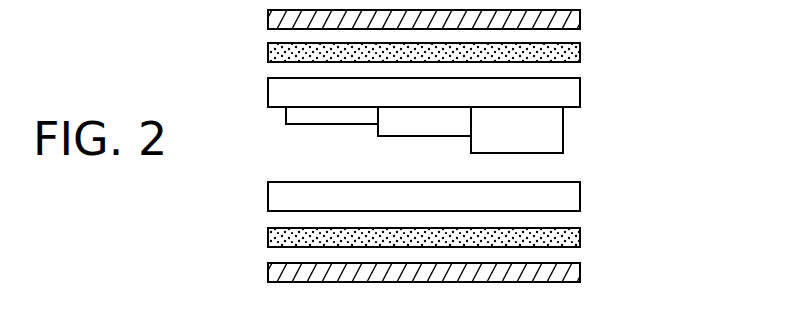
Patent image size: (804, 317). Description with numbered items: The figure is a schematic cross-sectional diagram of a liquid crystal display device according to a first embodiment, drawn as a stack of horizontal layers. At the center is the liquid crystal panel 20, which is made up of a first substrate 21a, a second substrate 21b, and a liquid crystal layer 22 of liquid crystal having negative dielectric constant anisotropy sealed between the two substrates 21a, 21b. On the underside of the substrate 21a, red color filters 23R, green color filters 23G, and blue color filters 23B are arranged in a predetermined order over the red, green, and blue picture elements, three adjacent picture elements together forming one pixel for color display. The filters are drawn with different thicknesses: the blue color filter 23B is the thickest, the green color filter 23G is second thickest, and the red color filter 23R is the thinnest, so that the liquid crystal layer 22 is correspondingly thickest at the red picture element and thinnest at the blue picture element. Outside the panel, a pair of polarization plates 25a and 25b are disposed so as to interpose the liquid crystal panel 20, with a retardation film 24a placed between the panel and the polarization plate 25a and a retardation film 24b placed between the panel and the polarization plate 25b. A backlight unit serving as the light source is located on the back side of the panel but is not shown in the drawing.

The liquid crystal panel 20 is at (253, 80).
The first substrate 21a is at (582, 91).
The second substrate 21b is at (582, 196).
The liquid crystal layer 22 is at (467, 145).
The red color filter 23R is at (340, 119).
The green color filter 23G is at (426, 128).
The blue color filter 23B is at (517, 139).
The retardation film 24a is at (582, 50).
The retardation film 24b is at (582, 235).
The polarization plate 25a is at (582, 13).
The polarization plate 25b is at (582, 270).